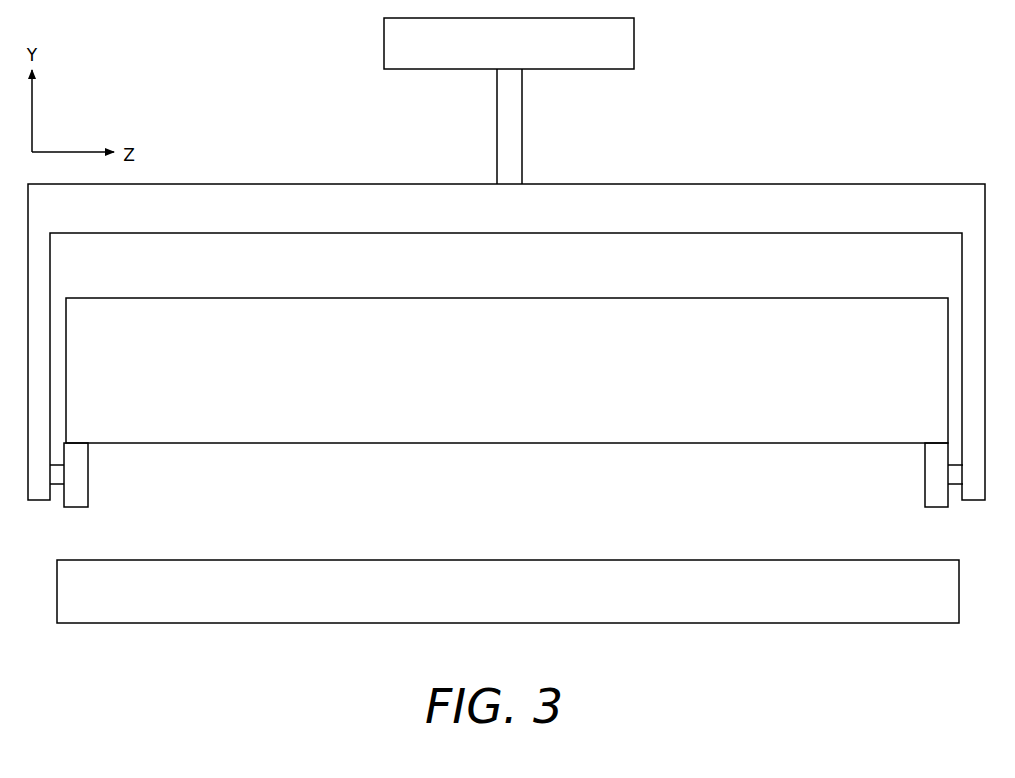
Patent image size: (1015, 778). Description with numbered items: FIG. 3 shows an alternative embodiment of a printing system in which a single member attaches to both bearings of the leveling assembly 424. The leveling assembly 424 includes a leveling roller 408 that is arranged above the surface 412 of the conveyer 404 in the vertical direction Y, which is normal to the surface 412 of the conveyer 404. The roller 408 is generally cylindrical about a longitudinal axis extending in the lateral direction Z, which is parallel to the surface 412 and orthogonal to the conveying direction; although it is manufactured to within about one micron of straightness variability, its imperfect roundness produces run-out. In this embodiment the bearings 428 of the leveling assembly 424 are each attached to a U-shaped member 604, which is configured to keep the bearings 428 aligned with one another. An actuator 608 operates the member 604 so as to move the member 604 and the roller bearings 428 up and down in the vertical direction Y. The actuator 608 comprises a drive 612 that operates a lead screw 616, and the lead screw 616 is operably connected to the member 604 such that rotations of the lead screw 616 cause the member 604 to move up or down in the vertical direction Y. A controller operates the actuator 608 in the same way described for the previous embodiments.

The conveyer 404 is at (130, 607).
The leveling roller 408 is at (633, 425).
The surface of the conveyer 412 is at (340, 555).
The leveling assembly 424 is at (742, 152).
The bearings 428 is at (89, 489).
The U-shaped member 604 is at (314, 193).
The actuator 608 is at (592, 89).
The drive 612 is at (409, 70).
The lead screw 616 is at (496, 128).